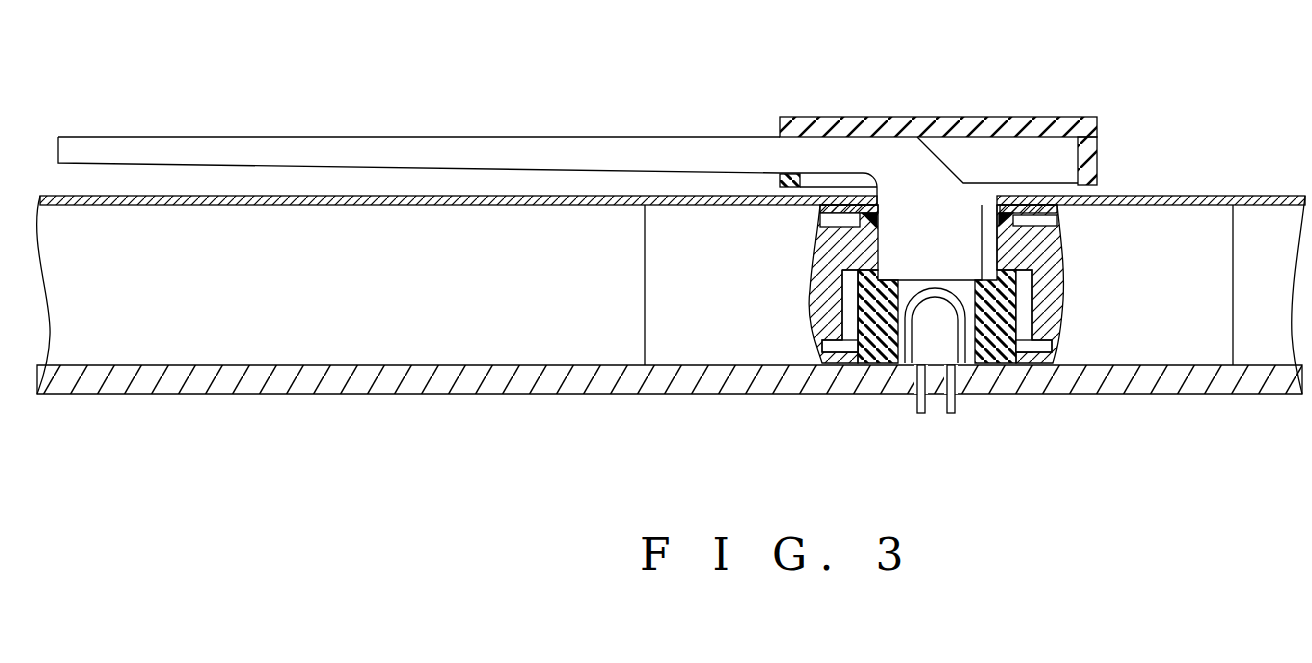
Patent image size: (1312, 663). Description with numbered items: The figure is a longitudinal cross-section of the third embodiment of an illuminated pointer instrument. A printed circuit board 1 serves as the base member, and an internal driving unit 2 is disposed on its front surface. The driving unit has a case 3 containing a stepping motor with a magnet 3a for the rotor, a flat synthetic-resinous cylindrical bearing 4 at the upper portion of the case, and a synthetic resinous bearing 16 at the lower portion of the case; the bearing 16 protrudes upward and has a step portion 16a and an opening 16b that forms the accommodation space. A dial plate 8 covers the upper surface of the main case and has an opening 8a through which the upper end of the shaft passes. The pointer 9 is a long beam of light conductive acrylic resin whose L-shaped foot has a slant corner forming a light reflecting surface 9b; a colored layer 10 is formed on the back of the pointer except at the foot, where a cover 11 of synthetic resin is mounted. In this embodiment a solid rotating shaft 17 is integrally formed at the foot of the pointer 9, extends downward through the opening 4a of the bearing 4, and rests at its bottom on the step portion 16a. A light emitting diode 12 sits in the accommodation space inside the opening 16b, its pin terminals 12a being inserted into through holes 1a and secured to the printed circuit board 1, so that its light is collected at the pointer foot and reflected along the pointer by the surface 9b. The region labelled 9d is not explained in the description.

The printed circuit board 1 is at (458, 396).
The through holes 1a is at (956, 375).
The internal driving unit 2 is at (1238, 240).
The case 3 is at (848, 368).
The magnet 3a is at (818, 212).
The bearing 4 is at (1062, 218).
The opening 4a is at (986, 206).
The dial plate 8 is at (1184, 196).
The opening 8a is at (878, 196).
The pointer 9 is at (562, 137).
The light reflecting surface 9b is at (944, 164).
The light guide recess 9d is at (845, 297).
The colored layer 10 is at (480, 172).
The cover 11 is at (1092, 117).
The light emitting diode 12 is at (962, 300).
The pin terminals 12a is at (917, 410).
The bearing 16 is at (820, 342).
The step portion 16a is at (1016, 262).
The opening 16b is at (1034, 300).
The solid rotating shaft 17 is at (824, 245).